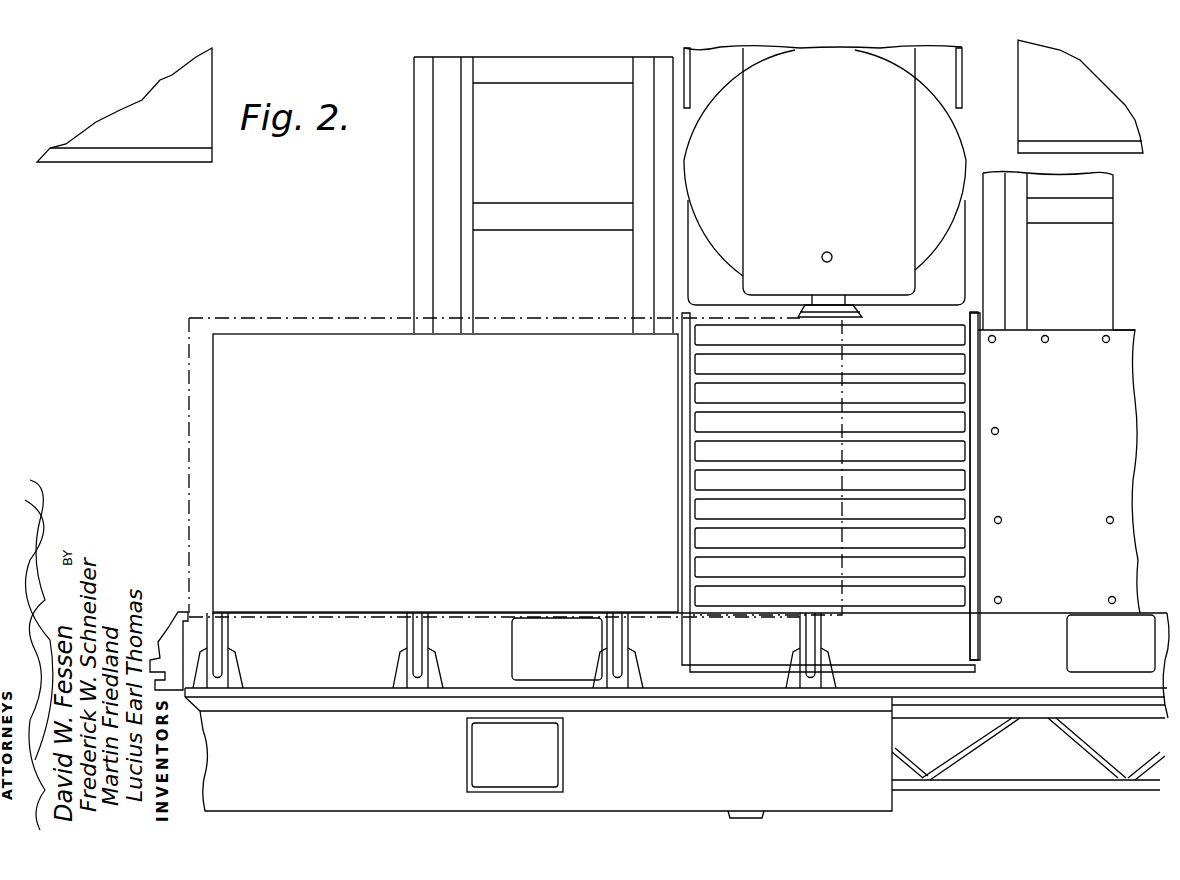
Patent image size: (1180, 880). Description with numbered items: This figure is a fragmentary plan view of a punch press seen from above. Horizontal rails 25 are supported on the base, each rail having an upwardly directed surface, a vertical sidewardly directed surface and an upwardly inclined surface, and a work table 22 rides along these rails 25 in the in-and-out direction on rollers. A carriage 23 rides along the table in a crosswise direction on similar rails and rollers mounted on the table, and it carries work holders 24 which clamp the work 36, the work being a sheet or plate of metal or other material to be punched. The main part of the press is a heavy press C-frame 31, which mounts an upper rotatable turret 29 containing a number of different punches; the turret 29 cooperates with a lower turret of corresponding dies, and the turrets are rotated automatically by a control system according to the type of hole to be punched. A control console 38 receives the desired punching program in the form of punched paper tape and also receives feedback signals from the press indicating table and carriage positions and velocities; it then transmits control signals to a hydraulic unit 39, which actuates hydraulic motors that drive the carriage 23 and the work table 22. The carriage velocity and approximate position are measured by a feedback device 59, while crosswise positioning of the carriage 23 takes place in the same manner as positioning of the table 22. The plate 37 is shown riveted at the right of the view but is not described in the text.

The work table 22 is at (1078, 338).
The carriage 23 is at (323, 730).
The work holders 24 is at (416, 640).
The horizontal rails 25 is at (447, 72).
The upper rotatable turret 29 is at (940, 153).
The press C-frame 31 is at (905, 47).
The work 36 is at (400, 318).
The plate 37 is at (1103, 428).
The control console 38 is at (160, 114).
The hydraulic unit 39 is at (1085, 92).
The feedback device 59 is at (760, 768).